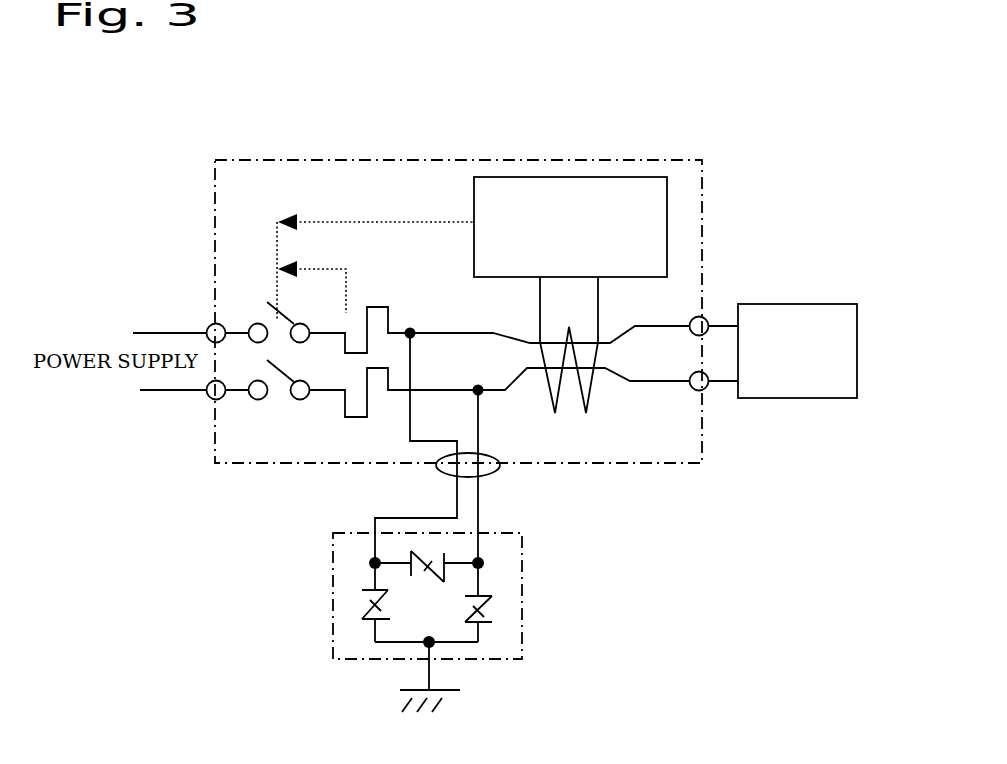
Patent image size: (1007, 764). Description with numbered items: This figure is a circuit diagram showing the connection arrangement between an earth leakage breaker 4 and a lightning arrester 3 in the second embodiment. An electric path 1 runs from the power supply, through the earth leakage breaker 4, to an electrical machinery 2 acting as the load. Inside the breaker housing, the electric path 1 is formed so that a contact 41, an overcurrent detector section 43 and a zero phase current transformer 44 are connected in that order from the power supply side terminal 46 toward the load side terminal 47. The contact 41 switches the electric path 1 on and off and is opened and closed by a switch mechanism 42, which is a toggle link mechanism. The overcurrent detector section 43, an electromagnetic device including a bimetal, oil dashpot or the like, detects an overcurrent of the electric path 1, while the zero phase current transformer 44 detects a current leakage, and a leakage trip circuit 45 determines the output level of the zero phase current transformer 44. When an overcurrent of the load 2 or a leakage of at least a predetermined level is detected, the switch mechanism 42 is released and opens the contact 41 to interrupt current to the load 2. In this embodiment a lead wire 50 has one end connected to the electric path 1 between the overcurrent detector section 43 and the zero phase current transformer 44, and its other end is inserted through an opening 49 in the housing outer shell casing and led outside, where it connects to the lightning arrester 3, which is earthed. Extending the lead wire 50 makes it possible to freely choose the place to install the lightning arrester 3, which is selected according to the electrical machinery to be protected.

The electric path 1 is at (458, 332).
The electrical machinery 2 is at (807, 304).
The lightning arrester 3 is at (333, 624).
The earth leakage breaker 4 is at (283, 160).
The contact 41 is at (283, 392).
The switch mechanism 42 is at (274, 252).
The overcurrent detector section 43 is at (343, 403).
The zero phase current transformer 44 is at (592, 393).
The leakage trip circuit 45 is at (563, 177).
The power supply side terminal 46 is at (206, 327).
The load side terminal 47 is at (701, 312).
The opening 49 is at (443, 477).
The lead wire 50 is at (480, 502).